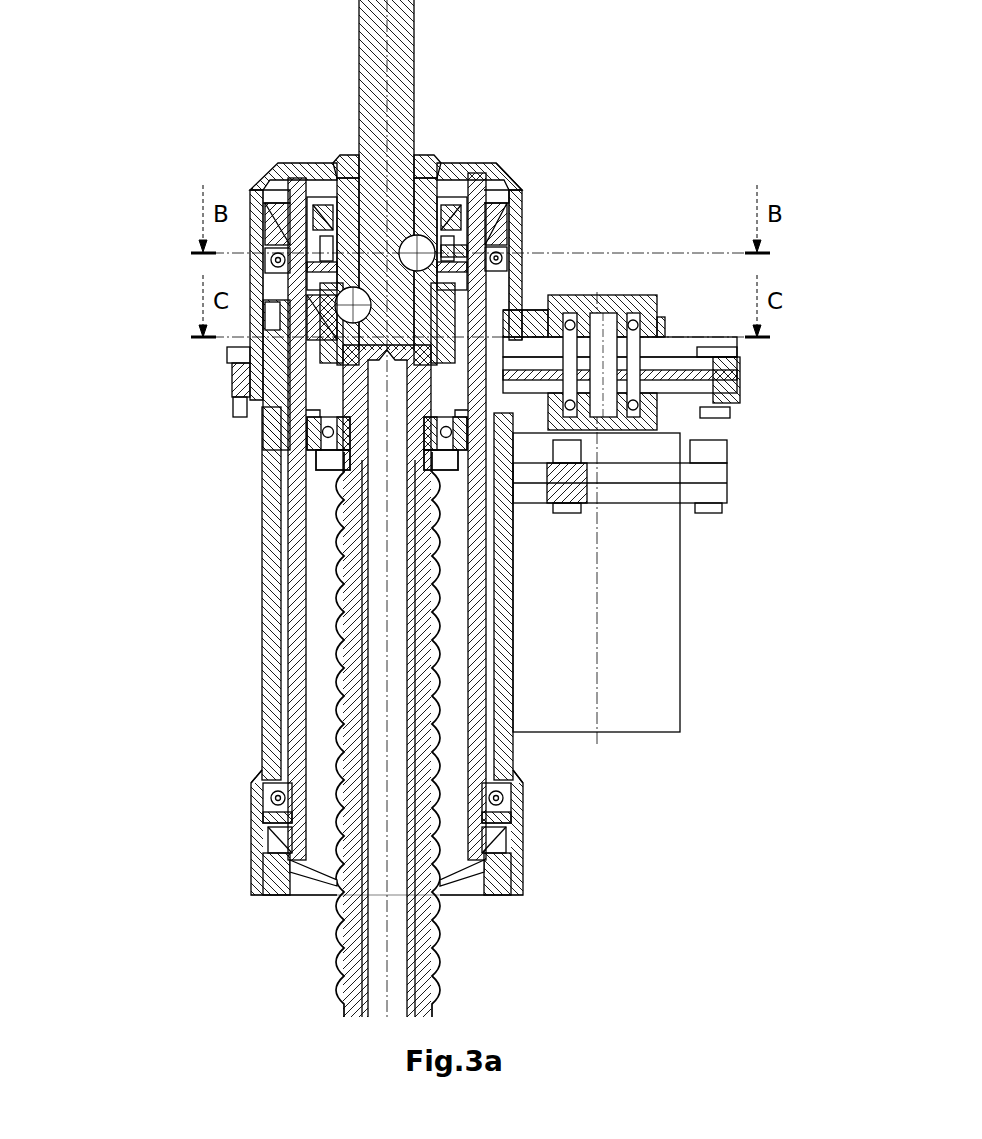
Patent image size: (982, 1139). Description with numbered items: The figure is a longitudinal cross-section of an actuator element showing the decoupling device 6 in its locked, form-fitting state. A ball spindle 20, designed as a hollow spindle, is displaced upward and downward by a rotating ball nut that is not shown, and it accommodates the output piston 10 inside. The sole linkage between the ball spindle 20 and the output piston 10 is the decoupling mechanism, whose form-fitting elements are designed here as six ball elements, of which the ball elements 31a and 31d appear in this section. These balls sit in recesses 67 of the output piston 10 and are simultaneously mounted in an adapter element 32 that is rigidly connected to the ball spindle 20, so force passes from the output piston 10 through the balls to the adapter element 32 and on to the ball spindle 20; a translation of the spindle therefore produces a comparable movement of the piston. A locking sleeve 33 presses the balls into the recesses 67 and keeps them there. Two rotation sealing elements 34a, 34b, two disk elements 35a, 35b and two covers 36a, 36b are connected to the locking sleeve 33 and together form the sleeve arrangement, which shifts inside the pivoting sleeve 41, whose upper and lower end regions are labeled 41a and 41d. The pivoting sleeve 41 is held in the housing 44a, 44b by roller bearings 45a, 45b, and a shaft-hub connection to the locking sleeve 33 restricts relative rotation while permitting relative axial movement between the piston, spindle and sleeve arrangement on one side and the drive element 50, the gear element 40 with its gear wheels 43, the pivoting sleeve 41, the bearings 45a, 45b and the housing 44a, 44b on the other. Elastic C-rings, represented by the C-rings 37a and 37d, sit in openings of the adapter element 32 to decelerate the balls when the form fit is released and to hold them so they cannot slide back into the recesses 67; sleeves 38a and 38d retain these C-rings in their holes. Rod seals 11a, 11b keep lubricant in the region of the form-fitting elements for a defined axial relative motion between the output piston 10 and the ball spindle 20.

The decoupling device 6 is at (220, 825).
The output piston 10 is at (393, 52).
The rod seal 11a is at (327, 190).
The rod seal 11b is at (322, 450).
The ball spindle 20 is at (322, 653).
The form-fitting element 31a is at (512, 240).
The form-fitting element 31d is at (283, 290).
The adapter element 32 is at (293, 163).
The locking sleeve 33 is at (232, 352).
The rotation sealing element 34a is at (335, 180).
The rotation sealing element 34b is at (570, 503).
The disk element 35a is at (280, 200).
The disk element 35b is at (300, 340).
The cover 36a is at (460, 200).
The cover 36b is at (480, 313).
The elastic C-ring 37a is at (470, 215).
The elastic C-ring 37d is at (308, 425).
The sleeve 38a is at (500, 262).
The sleeve 38d is at (330, 430).
The gear element 40 is at (760, 380).
The pivoting sleeve 41 is at (505, 690).
The housing upper end 41a is at (505, 165).
The housing lower end lip 41d is at (520, 898).
The gear wheels 43 is at (722, 407).
The housing 44a is at (505, 185).
The housing 44b is at (520, 745).
The roller bearing 45a is at (525, 260).
The roller bearing 45b is at (512, 818).
The drive element 50 is at (695, 627).
The recesses 67 is at (360, 290).